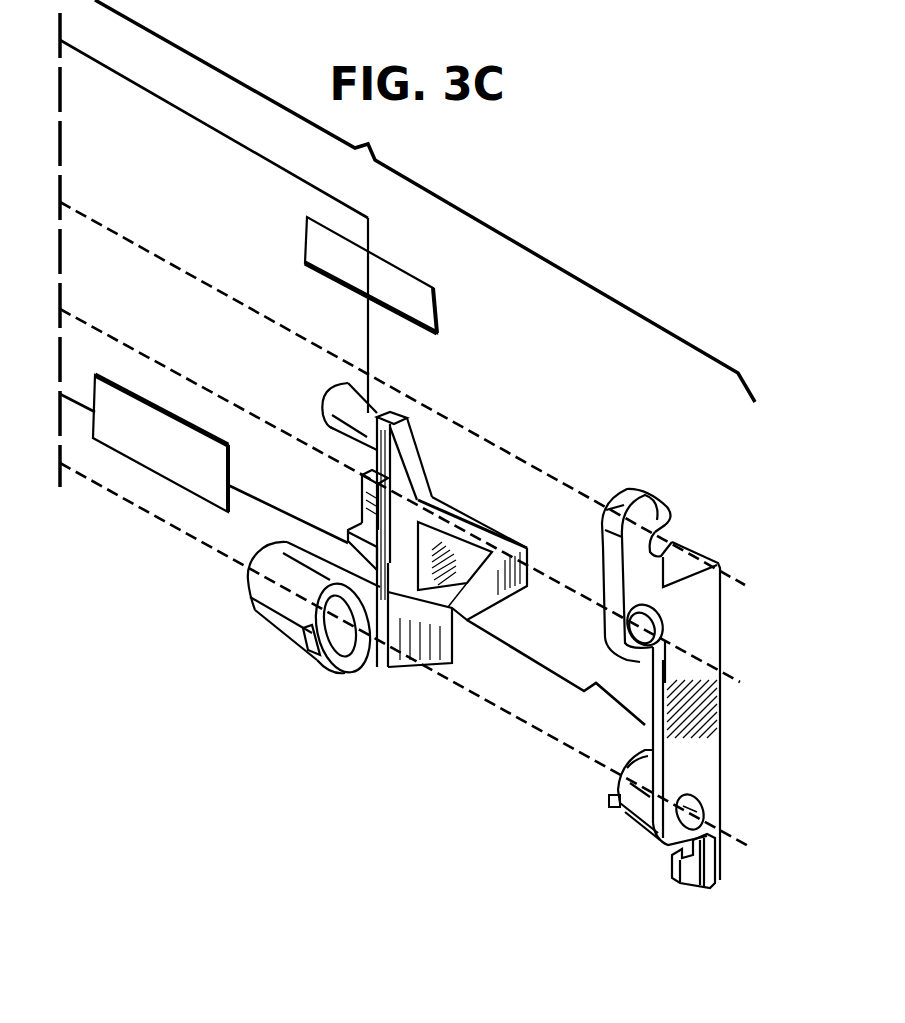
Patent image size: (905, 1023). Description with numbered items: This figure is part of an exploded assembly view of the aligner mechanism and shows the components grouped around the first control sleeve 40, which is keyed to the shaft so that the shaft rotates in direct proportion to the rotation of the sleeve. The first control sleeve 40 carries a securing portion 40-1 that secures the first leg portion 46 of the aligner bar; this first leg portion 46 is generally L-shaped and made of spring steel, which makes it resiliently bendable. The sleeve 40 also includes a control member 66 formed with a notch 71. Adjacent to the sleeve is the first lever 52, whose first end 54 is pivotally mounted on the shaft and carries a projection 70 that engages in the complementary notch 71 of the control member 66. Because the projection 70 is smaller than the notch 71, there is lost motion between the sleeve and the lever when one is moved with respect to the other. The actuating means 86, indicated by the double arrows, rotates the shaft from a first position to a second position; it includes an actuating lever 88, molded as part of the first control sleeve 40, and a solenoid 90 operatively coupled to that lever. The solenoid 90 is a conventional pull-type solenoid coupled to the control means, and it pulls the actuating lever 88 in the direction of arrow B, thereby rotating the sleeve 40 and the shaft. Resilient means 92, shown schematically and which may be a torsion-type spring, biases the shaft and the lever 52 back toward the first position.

The first control sleeve 40 is at (277, 587).
The securing portion 40-1 is at (347, 530).
The first leg portion 46 is at (378, 492).
The first lever 52 is at (737, 626).
The first end 54 is at (628, 823).
The control member 66 is at (307, 630).
The projection 70 is at (607, 800).
The notch 71 is at (310, 650).
The actuating means 86 is at (514, 358).
The actuating lever 88 is at (376, 684).
The solenoid 90 is at (443, 312).
The resilient means 92 is at (130, 390).
The arrow B is at (350, 353).